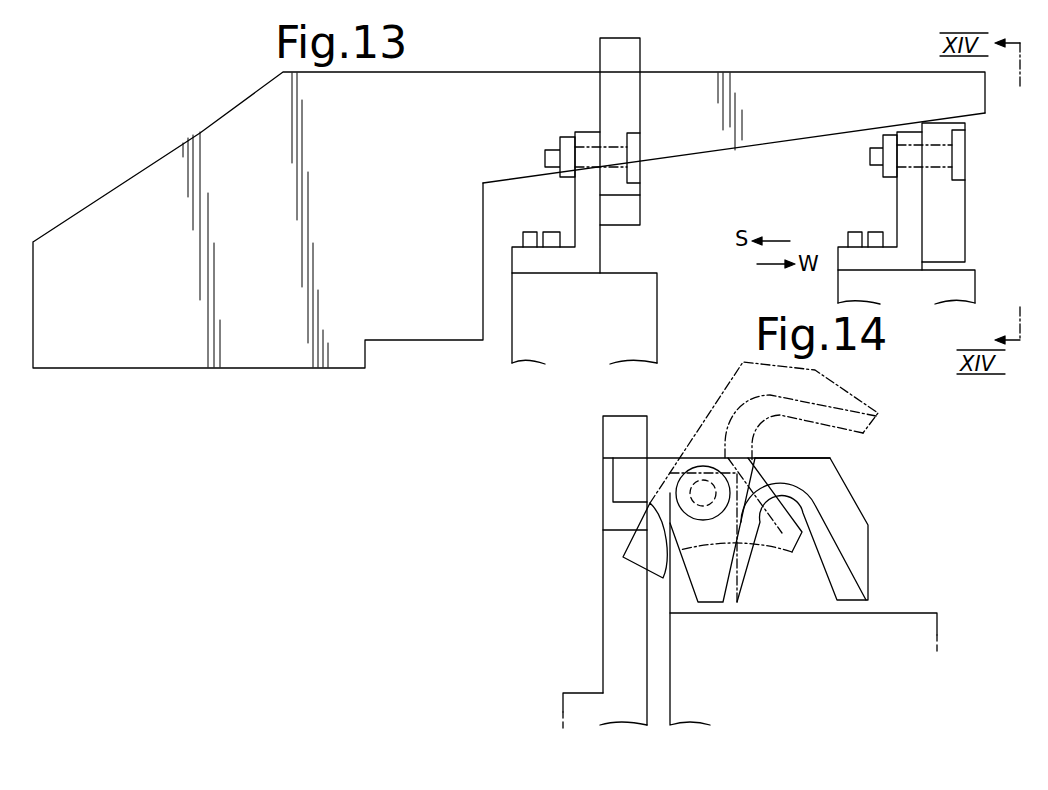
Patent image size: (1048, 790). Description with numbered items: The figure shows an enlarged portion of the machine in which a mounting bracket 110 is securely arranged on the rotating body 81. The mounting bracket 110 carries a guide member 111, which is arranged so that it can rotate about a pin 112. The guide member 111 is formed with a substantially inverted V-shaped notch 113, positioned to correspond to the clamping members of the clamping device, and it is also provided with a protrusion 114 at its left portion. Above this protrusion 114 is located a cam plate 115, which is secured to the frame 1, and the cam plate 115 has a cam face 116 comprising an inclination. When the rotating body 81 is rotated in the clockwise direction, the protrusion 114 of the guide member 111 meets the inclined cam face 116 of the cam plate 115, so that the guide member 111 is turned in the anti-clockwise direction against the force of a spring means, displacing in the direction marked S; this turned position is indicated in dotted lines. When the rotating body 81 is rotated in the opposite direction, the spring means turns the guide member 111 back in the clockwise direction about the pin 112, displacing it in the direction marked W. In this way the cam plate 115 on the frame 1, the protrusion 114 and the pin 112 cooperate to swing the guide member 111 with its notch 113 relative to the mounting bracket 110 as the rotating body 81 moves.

In FIG. 14, the frame 1 is at (590, 703).
In FIG. 13, the rotating body 81 is at (648, 325).
In FIG. 14, the rotating body 81 is at (890, 623).
In FIG. 13, the mounting bracket 110 is at (590, 220).
In FIG. 14, the mounting bracket 110 is at (680, 586).
In FIG. 13, the guide member 111 is at (642, 45).
In FIG. 14, the guide member 111 is at (847, 387).
In FIG. 13, the pin 112 is at (943, 150).
In FIG. 14, the pin 112 is at (705, 493).
In FIG. 14, the inverted V-shaped notch 113 is at (826, 583).
In FIG. 13, the protrusion 114 is at (637, 212).
In FIG. 14, the protrusion 114 is at (627, 478).
In FIG. 13, the cam plate 115 is at (470, 88).
In FIG. 14, the cam plate 115 is at (617, 438).
In FIG. 13, the cam face 116 is at (766, 148).
In FIG. 14, the cam face 116 is at (613, 517).